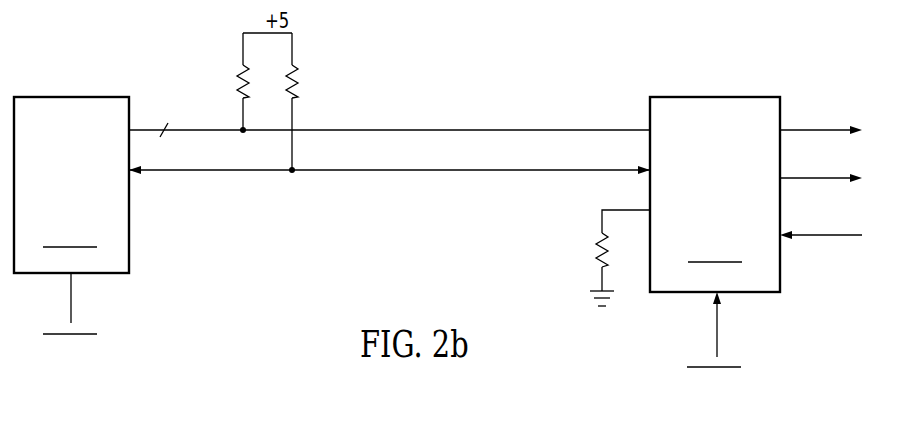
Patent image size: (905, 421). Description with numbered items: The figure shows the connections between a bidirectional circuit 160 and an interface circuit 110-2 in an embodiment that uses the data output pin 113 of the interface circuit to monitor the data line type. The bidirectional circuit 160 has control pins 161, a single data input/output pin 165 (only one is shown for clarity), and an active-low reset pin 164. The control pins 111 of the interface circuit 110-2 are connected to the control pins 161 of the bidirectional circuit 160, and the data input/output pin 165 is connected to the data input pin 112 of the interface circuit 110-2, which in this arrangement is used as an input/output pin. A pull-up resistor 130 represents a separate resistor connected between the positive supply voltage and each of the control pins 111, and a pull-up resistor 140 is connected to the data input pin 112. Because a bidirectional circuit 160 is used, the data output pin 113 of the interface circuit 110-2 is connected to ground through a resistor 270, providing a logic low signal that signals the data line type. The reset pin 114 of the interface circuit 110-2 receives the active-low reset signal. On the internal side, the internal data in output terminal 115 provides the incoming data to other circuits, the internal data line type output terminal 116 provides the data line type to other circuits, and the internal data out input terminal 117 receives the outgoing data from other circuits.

The bidirectional circuit 160 is at (85, 96).
The reset pin 164 is at (71, 290).
The control pins 161 is at (203, 128).
The data input/output pin 165 is at (203, 168).
The pull-up resistor 130 is at (238, 74).
The pull-up resistor 140 is at (296, 73).
The interface circuit 110-2 is at (724, 96).
The control pins 111 is at (609, 128).
The data input pin 112 is at (609, 168).
The data output pin 113 is at (609, 208).
The resistor 270 is at (596, 246).
The reset pin 114 is at (717, 316).
The internal data in output terminal 115 is at (814, 128).
The internal data line type output terminal 116 is at (814, 176).
The internal data out input terminal 117 is at (814, 233).